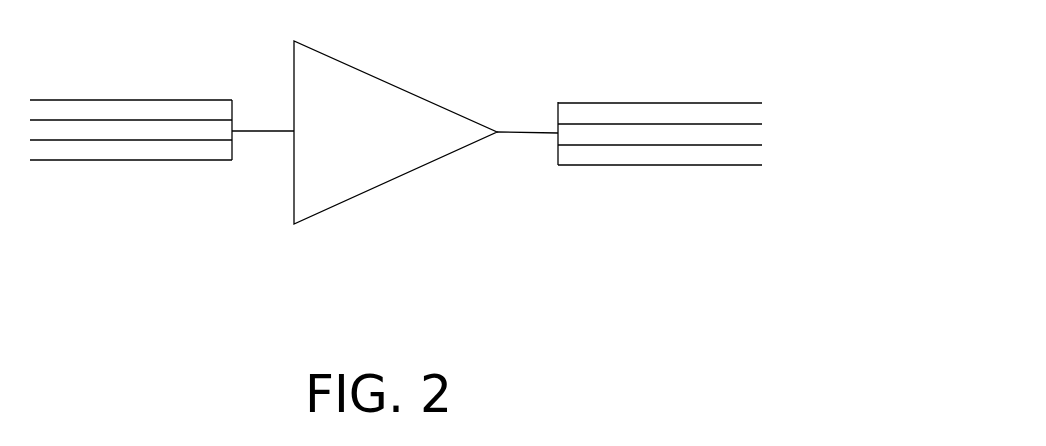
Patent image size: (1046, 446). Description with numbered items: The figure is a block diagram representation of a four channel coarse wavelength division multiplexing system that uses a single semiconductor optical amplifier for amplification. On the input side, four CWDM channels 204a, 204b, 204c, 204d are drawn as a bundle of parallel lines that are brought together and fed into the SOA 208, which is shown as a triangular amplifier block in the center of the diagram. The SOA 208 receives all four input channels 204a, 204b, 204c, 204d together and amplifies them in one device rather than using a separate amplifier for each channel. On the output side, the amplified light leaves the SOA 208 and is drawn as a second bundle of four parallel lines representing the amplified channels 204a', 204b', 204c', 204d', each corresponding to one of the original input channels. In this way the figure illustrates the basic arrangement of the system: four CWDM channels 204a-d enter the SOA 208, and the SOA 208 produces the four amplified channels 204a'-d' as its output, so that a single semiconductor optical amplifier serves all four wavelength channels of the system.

The CWDM channel 204a is at (139, 185).
The CWDM channel 204b is at (131, 194).
The CWDM channel 204c is at (131, 72).
The CWDM channel 204d is at (149, 82).
The SOA 208 is at (362, 71).
The amplified channel 204a' is at (669, 188).
The amplified channel 204b' is at (660, 197).
The amplified channel 204c' is at (660, 75).
The amplified channel 204d' is at (679, 82).